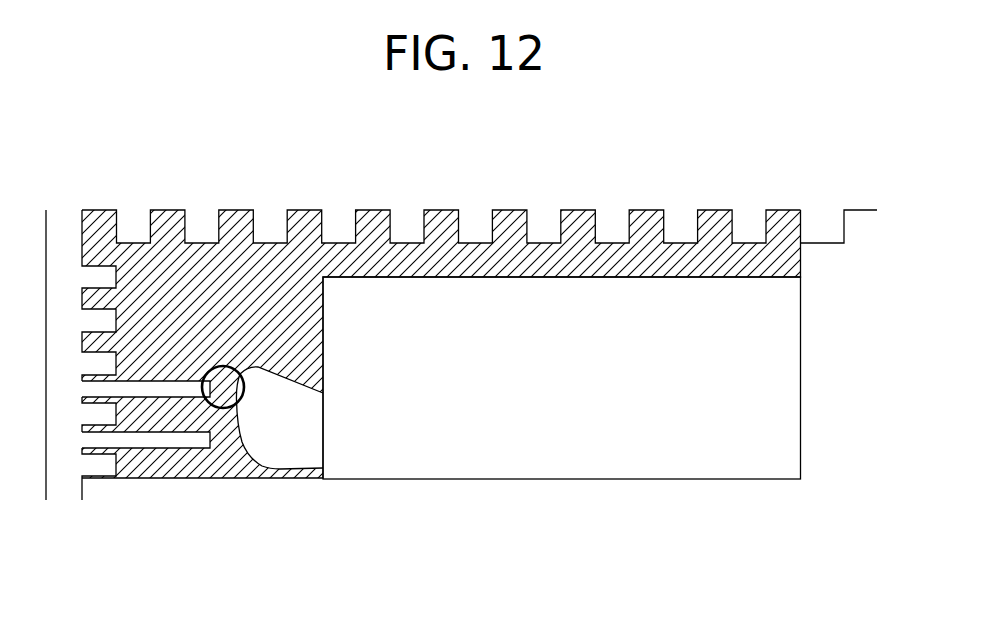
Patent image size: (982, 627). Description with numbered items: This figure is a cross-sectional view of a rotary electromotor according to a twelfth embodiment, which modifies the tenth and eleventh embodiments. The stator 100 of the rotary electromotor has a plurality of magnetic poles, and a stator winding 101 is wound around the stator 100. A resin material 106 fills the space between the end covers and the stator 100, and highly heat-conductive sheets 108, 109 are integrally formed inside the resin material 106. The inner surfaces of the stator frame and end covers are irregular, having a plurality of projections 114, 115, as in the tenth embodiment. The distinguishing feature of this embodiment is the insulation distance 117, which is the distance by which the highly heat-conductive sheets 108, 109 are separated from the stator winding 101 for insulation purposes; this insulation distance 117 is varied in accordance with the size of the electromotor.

The stator 100 is at (562, 378).
The stator winding 101 is at (290, 455).
The resin material 106 is at (230, 273).
The highly heat-conductive sheet 108 is at (100, 388).
The highly heat-conductive sheet 109 is at (168, 438).
The projections 114 is at (133, 230).
The projections 115 is at (100, 277).
The insulation distance 117 is at (225, 395).